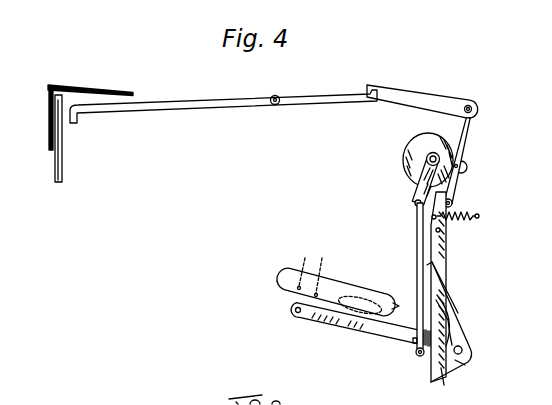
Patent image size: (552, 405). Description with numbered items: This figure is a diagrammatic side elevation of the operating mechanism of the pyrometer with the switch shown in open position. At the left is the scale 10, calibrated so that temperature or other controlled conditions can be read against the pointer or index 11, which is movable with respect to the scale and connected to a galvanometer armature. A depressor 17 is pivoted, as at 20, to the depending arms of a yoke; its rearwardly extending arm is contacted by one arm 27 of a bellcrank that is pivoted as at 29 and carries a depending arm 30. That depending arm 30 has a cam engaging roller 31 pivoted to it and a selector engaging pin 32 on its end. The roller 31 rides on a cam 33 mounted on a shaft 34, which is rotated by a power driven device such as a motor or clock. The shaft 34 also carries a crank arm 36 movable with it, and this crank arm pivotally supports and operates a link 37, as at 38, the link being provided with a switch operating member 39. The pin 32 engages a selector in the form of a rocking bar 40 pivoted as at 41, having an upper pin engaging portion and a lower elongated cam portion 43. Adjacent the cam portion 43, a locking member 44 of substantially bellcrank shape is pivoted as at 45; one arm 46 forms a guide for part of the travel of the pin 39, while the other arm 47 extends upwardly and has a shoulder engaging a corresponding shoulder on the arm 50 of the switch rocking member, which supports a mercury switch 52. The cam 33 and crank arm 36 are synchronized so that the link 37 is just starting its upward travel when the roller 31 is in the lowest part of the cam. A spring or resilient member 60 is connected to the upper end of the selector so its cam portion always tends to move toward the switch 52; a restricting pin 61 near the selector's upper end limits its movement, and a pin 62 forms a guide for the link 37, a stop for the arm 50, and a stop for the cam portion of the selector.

The scale 10 is at (54, 168).
The pointer or index 11 is at (90, 89).
The depressor 17 is at (184, 104).
The pivot 20 is at (272, 105).
The arm of bellcrank 27 is at (405, 91).
The pivot 29 is at (475, 104).
The depending arm 30 is at (463, 141).
The cam engaging roller 31 is at (470, 168).
The selector engaging pin 32 is at (456, 202).
The cam 33 is at (404, 148).
The shaft 34 is at (426, 160).
The crank arm 36 is at (412, 191).
The link 37 is at (416, 237).
The pivot 38 is at (416, 205).
The switch operating member 39 is at (416, 356).
The rocking bar 40 is at (446, 268).
The pivot 41 is at (442, 238).
The cam portion 43 is at (444, 386).
The locking member 44 is at (466, 333).
The pivot 45 is at (463, 350).
The arm 46 is at (452, 367).
The arm 47 is at (459, 320).
The arm of switch rocking member 50 is at (347, 328).
The mercury switch 52 is at (337, 283).
The spring or resilient member 60 is at (467, 226).
The restricting pin 61 is at (441, 227).
The pin 62 is at (413, 341).